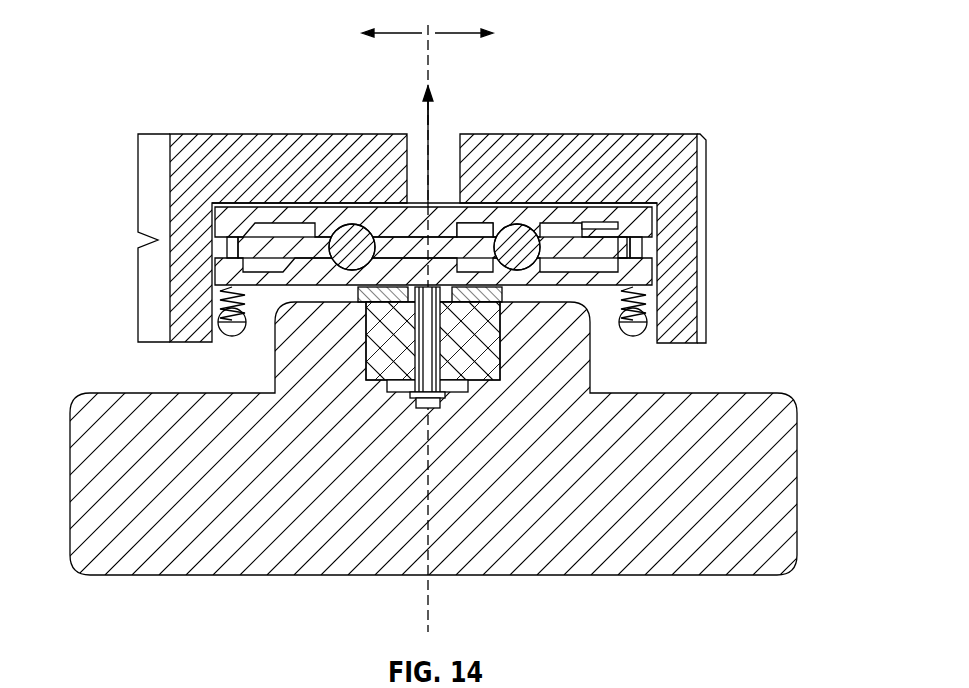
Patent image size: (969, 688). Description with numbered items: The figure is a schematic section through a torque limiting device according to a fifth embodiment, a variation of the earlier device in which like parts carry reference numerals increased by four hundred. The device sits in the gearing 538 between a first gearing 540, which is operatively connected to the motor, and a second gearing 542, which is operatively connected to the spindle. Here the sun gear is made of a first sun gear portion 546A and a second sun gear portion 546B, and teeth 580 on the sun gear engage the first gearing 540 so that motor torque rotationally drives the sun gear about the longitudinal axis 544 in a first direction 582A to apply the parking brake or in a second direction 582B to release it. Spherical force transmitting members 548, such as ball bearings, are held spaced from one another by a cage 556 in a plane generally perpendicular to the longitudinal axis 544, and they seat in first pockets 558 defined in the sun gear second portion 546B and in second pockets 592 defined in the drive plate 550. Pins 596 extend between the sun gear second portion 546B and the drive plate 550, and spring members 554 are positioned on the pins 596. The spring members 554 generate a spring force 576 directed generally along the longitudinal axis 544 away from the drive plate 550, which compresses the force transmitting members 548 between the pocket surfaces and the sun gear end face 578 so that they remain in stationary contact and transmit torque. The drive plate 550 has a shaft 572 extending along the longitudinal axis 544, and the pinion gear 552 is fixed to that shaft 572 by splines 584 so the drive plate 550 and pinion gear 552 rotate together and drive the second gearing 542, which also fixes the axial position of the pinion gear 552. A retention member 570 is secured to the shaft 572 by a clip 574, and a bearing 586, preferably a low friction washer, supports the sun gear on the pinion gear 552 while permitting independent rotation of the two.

The gearing 538 is at (104, 361).
The first gearing 540 is at (138, 190).
The second gearing 542 is at (797, 505).
The longitudinal axis 544 is at (428, 590).
The first sun gear portion 546A is at (676, 134).
The second sun gear portion 546B is at (482, 158).
The force transmitting members 548 is at (352, 240).
The drive plate 550 is at (223, 263).
The pinion gear 552 is at (498, 325).
The spring members 554 is at (230, 340).
The cage 556 is at (296, 240).
The first pockets 558 is at (608, 228).
The retention member 570 is at (402, 387).
The shaft 572 is at (440, 355).
The clip 574 is at (440, 402).
The spring force 576 is at (428, 125).
The sun gear end face 578 is at (463, 232).
The teeth 580 is at (708, 152).
The first direction 582A is at (393, 32).
The second direction 582B is at (471, 32).
The splines 584 is at (440, 375).
The bearing 586 is at (360, 300).
The second pockets 592 is at (593, 265).
The pins 596 is at (647, 327).